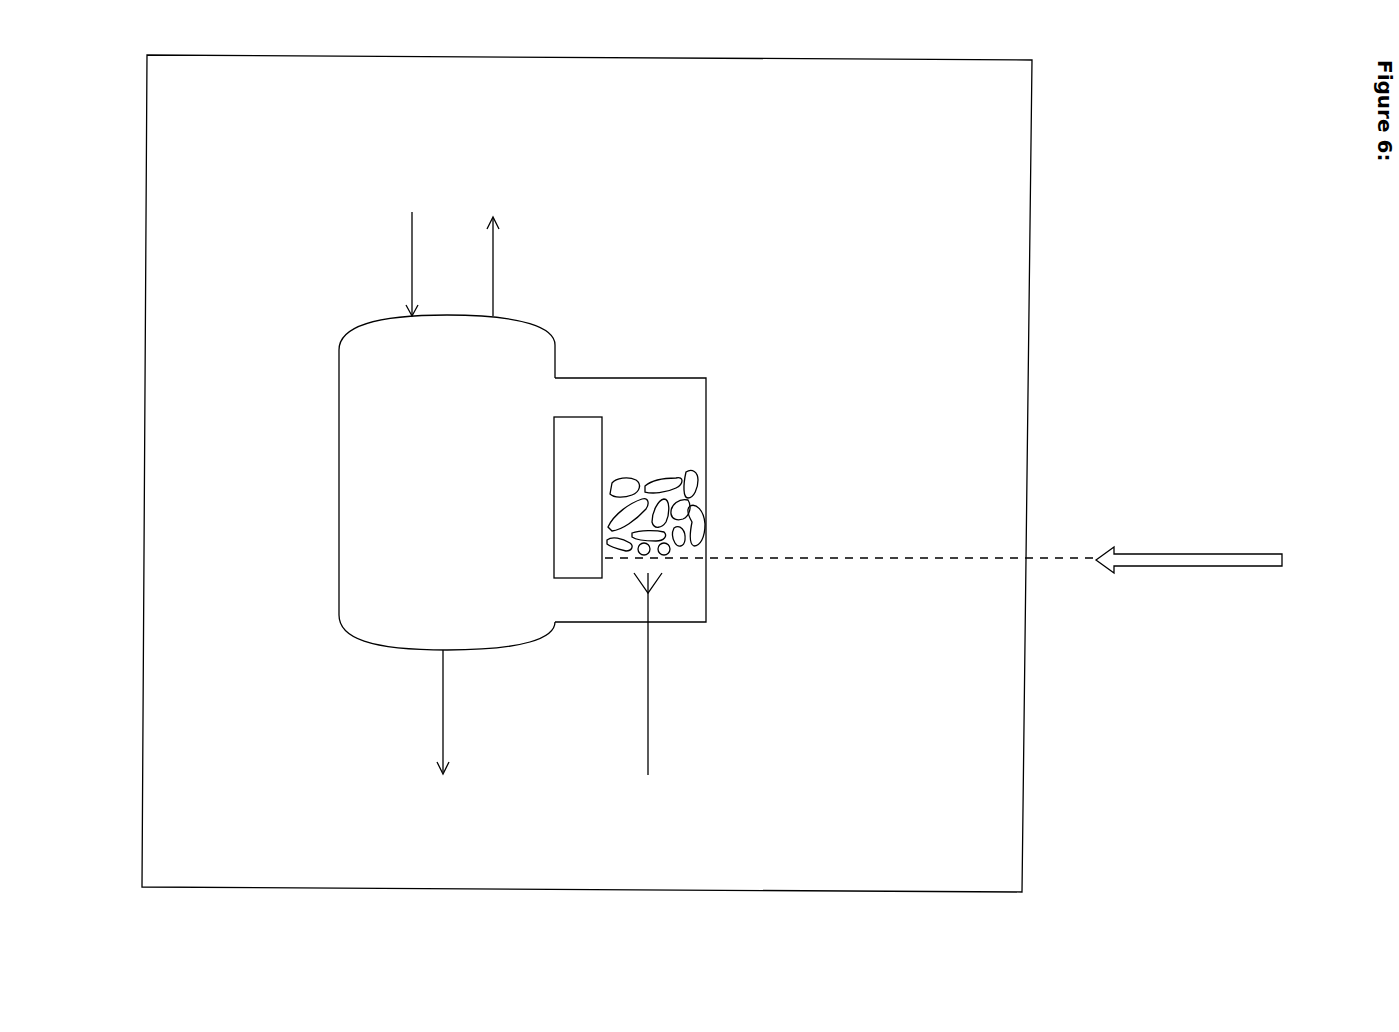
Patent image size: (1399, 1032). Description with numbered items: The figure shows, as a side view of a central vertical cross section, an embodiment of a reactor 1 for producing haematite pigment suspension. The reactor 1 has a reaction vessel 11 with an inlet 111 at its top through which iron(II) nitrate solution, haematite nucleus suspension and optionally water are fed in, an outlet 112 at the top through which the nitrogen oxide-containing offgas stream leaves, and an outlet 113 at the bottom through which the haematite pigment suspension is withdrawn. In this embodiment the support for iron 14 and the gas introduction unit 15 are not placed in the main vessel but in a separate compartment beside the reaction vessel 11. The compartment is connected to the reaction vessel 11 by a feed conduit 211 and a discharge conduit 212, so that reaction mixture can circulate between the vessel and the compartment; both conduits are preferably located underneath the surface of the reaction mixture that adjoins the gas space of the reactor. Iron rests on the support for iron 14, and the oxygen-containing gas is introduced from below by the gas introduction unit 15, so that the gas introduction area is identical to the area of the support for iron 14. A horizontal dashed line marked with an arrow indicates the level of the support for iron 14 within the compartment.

The reactor for producing haematite pigment suspension 1 is at (1012, 346).
The reaction vessel 11 is at (338, 435).
The inlet for iron(II) nitrate solution, haematite nucleus suspension and optionally 111 is at (410, 312).
The outlet for NOX 112 is at (495, 316).
The outlet for haematite pigment suspension 113 is at (443, 651).
The support for iron 14 is at (677, 562).
The gas introduction unit 15 is at (663, 588).
The feed conduit from compartment to the reaction vessel 211 is at (556, 597).
The discharge conduit from compartment to the reaction vessel 212 is at (555, 402).